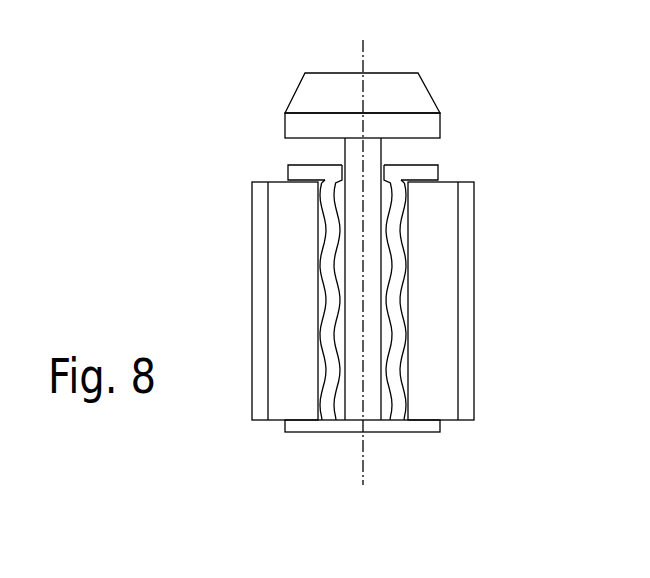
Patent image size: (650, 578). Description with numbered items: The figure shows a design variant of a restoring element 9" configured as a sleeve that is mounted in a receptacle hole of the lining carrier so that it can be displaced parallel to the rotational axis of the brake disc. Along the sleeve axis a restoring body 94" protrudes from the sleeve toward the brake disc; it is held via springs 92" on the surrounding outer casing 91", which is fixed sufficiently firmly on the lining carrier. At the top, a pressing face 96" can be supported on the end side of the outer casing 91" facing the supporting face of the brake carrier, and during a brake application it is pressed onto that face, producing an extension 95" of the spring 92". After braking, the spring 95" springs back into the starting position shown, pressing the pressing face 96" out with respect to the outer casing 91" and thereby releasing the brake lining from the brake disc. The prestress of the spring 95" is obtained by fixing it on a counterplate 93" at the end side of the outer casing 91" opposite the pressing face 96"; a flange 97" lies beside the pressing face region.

The restoring element 9 is at (250, 446).
The outer casing 91 is at (462, 342).
The spring 92 is at (391, 413).
The counterplate 93 is at (428, 426).
The restoring body 94 is at (368, 292).
The spring 95 is at (412, 172).
The pressing face 96 is at (408, 98).
The left flange 97 is at (295, 170).